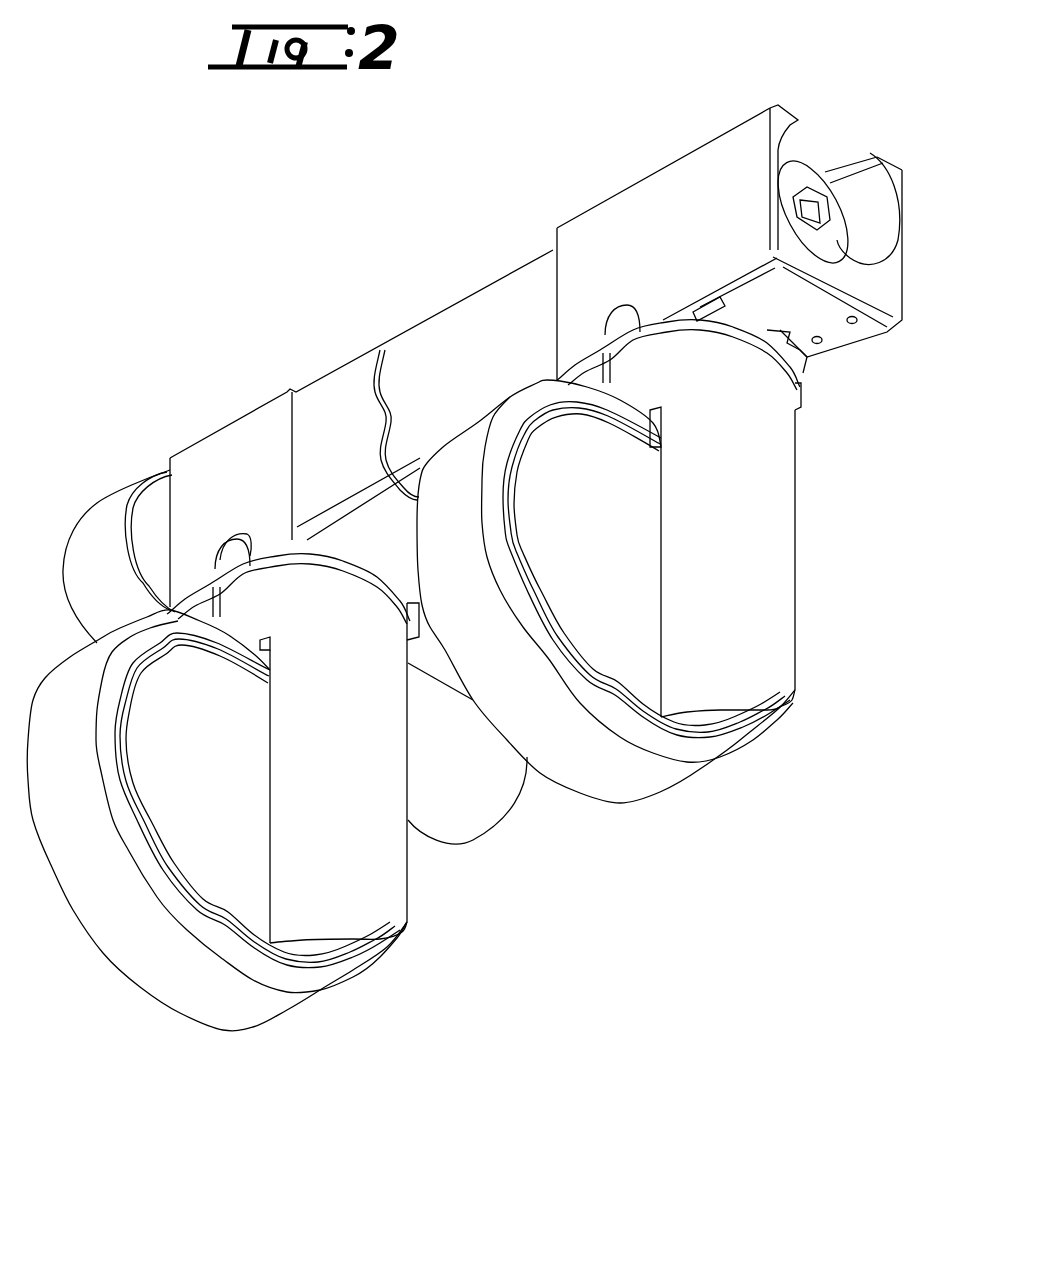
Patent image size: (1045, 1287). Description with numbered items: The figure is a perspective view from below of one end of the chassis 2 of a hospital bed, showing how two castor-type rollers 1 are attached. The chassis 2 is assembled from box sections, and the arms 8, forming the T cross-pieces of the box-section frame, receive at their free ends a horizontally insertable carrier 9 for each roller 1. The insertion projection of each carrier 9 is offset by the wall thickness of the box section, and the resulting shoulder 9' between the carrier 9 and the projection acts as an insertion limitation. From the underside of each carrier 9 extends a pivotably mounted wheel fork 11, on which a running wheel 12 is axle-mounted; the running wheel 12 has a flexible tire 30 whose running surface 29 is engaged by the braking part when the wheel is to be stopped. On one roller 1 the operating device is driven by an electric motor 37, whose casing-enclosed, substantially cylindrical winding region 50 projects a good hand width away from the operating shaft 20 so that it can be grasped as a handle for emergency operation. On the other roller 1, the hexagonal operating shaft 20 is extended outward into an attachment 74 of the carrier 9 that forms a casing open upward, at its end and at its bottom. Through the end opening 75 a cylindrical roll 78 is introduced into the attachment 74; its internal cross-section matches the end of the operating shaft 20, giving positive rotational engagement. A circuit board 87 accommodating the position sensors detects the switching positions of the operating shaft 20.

The roller 1 is at (476, 736).
The chassis 2 is at (477, 290).
The arms 8 is at (430, 373).
The carrier 9 is at (474, 340).
The shoulder 9' is at (352, 377).
The wheel fork 11 is at (760, 550).
The running wheel 12 is at (622, 803).
The operating shaft 20 is at (817, 203).
The running surface 29 is at (653, 775).
The flexible tire 30 is at (720, 747).
The electric motor 37 is at (112, 478).
The winding region 50 is at (463, 777).
The attachment 74 is at (737, 127).
The end opening 75 is at (870, 193).
The cylindrical roll 78 is at (818, 178).
The circuit board 87 is at (812, 317).